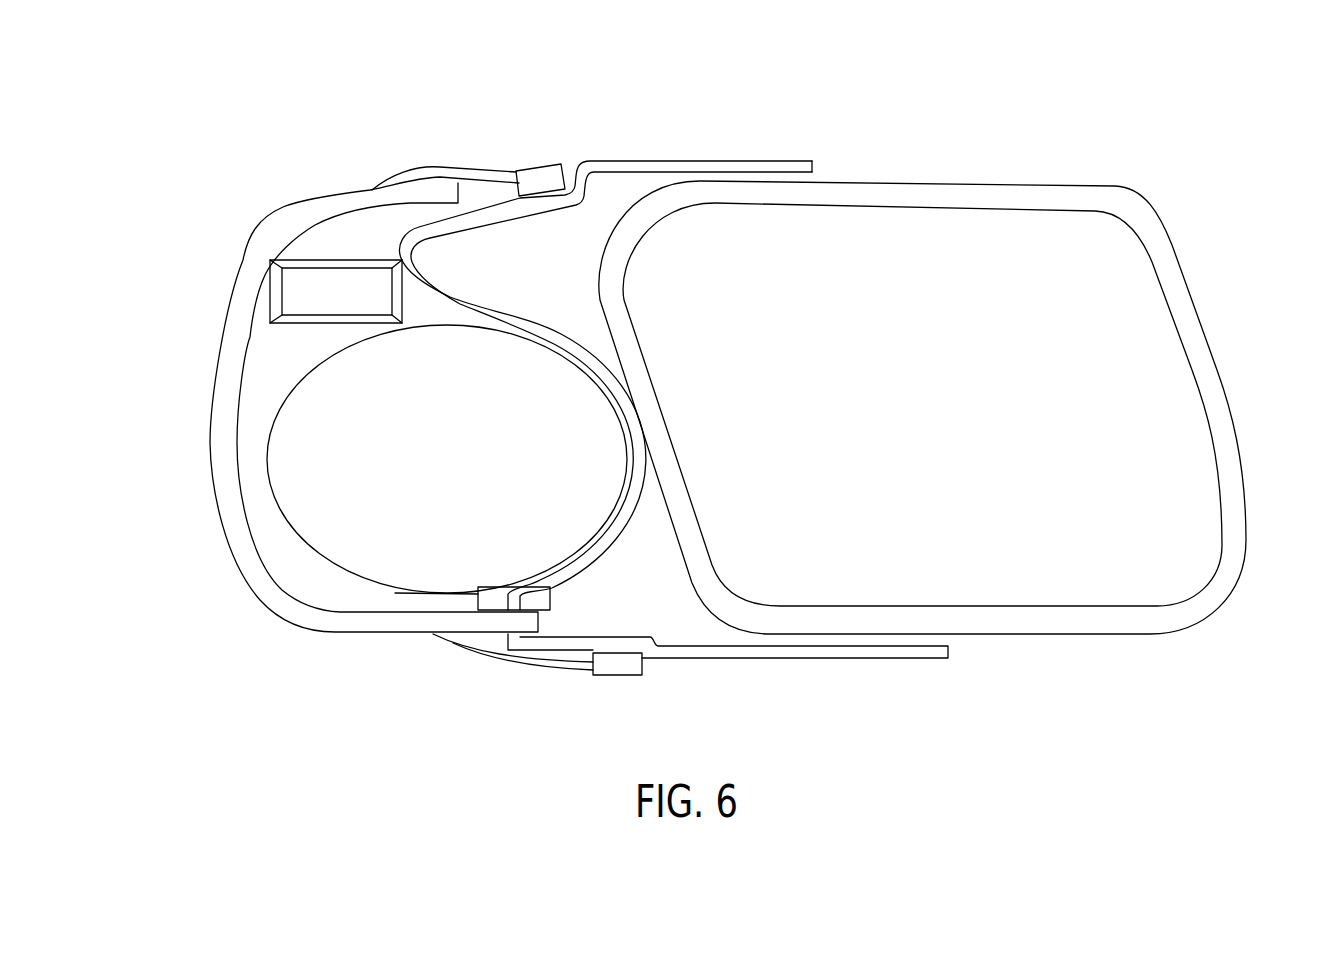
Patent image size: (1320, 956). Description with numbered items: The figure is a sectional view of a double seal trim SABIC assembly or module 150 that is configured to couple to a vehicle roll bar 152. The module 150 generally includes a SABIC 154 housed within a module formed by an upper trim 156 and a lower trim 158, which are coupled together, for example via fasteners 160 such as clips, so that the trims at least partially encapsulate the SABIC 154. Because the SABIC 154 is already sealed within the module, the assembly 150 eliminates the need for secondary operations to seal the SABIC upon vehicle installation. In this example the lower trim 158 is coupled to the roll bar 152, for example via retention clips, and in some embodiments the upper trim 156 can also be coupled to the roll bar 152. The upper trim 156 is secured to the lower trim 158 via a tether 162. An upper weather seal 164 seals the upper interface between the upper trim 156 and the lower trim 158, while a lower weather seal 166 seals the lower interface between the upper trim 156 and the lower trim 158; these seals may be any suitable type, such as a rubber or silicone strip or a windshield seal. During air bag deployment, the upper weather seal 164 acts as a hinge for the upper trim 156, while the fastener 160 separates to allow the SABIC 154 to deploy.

The SABIC module 150 is at (200, 131).
The vehicle roll bar 152 is at (1200, 355).
The SABIC 154 is at (402, 577).
The upper trim 156 is at (312, 213).
The lower trim 158 is at (690, 653).
The fasteners 160 is at (492, 597).
The tether 162 is at (302, 298).
The upper weather seal 164 is at (463, 174).
The lower weather seal 166 is at (510, 655).